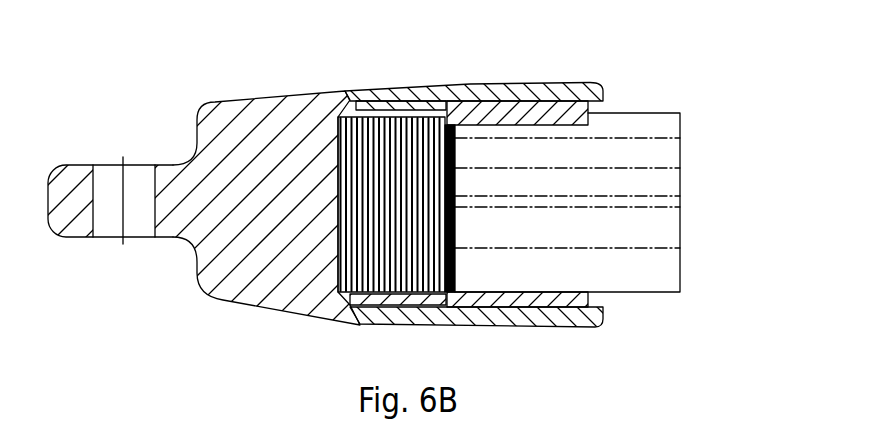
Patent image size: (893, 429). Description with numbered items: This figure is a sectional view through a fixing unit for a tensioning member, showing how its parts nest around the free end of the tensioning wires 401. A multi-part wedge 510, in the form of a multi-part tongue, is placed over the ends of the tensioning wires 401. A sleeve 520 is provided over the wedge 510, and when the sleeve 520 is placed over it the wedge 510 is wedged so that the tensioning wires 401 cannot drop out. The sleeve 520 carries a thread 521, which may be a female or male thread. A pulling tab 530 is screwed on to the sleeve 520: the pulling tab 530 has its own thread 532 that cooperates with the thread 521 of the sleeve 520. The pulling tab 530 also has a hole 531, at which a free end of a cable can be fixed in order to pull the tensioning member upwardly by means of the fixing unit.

The tensioning wires 401 is at (668, 230).
The multi-part wedge 510 is at (587, 102).
The sleeve 520 is at (523, 82).
The thread 521 is at (353, 295).
The pulling tab 530 is at (220, 300).
The hole 531 is at (113, 225).
The thread 532 is at (338, 96).